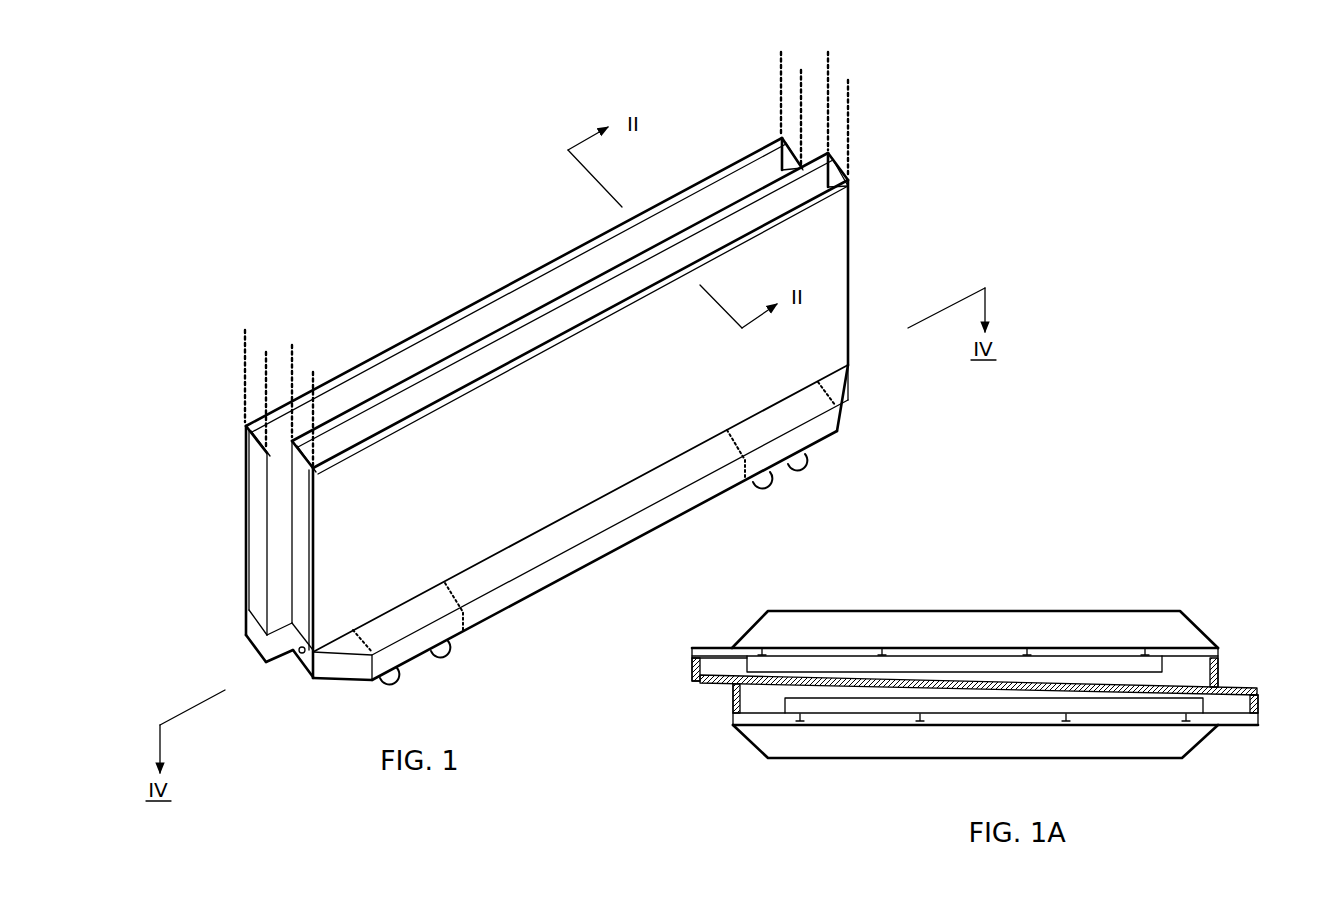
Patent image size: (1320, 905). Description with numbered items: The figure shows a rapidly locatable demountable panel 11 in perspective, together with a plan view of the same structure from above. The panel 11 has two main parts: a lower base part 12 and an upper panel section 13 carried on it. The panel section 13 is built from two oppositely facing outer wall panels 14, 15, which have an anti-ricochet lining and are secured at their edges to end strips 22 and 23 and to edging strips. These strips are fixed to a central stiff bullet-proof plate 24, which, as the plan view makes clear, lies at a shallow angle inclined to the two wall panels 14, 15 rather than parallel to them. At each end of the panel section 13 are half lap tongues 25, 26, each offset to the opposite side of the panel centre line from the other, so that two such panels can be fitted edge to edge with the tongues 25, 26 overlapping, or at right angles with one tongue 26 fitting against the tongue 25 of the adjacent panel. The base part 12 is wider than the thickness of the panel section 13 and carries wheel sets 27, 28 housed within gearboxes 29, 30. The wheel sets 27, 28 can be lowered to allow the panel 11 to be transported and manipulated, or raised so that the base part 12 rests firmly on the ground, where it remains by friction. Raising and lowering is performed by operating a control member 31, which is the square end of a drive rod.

In FIG. 1, the demountable panel 11 is at (463, 242).
In FIG. 1, the base part 12 is at (720, 497).
In FIG. 1, the panel section 13 is at (760, 385).
In FIG. 1, the outer wall panel 14 is at (375, 500).
In FIG. 1A, the outer wall panel 14 is at (842, 727).
In FIG. 1, the outer wall panel 15 is at (577, 248).
In FIG. 1A, the outer wall panel 15 is at (851, 647).
In FIG. 1, the end strip 22 is at (303, 480).
In FIG. 1A, the end strip 22 is at (688, 672).
In FIG. 1, the end strip 23 is at (843, 170).
In FIG. 1A, the end strip 23 is at (1260, 706).
In FIG. 1, the central stiff bullet-proof plate 24 is at (482, 333).
In FIG. 1A, the central stiff bullet-proof plate 24 is at (958, 680).
In FIG. 1, the half lap tongue 25 is at (270, 430).
In FIG. 1A, the half lap tongue 25 is at (716, 667).
In FIG. 1, the half lap tongue 26 is at (817, 183).
In FIG. 1A, the half lap tongue 26 is at (1243, 705).
In FIG. 1, the wheel set 27 is at (440, 660).
In FIG. 1, the wheel set 28 is at (798, 467).
In FIG. 1, the gearbox 29 is at (465, 618).
In FIG. 1, the gearbox 30 is at (742, 466).
In FIG. 1, the control member 31 is at (297, 657).